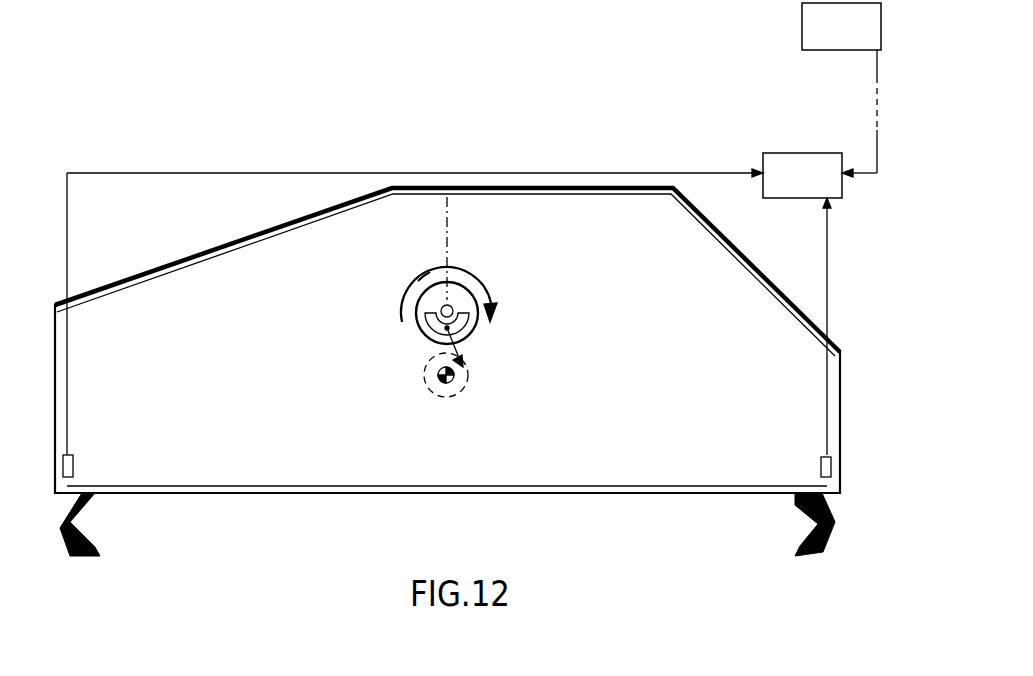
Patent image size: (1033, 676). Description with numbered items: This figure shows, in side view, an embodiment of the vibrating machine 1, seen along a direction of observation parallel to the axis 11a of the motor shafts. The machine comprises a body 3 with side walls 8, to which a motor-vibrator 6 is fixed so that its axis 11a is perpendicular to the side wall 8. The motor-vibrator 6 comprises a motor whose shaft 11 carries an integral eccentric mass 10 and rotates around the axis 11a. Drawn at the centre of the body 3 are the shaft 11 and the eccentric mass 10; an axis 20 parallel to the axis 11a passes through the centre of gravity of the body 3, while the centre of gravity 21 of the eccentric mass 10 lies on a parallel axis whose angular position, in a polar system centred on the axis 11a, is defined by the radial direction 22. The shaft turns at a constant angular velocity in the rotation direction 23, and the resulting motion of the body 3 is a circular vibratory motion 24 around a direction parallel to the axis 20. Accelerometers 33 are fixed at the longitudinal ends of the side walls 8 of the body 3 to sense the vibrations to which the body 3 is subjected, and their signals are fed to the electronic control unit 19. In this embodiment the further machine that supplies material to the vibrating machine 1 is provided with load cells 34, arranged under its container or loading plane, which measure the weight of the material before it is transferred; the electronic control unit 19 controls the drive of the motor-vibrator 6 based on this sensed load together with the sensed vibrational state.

The vibrating machine 1 is at (130, 128).
The body 3 is at (46, 412).
The motor-vibrator 6 is at (413, 328).
The side wall 8 is at (834, 400).
The eccentric mass 10 is at (424, 333).
The shaft 11 is at (460, 318).
The axis 11a is at (420, 280).
The electronic control unit 19 is at (472, 175).
The axis through the centre of gravity of the body 20 is at (453, 383).
The centre of gravity of the eccentric mass 21 is at (450, 331).
The radial direction 22 is at (450, 245).
The rotation direction 23 is at (475, 283).
The circular vibratory motion 24 is at (433, 396).
The accelerometer 33 is at (62, 458).
The load cell 34 is at (841, 88).